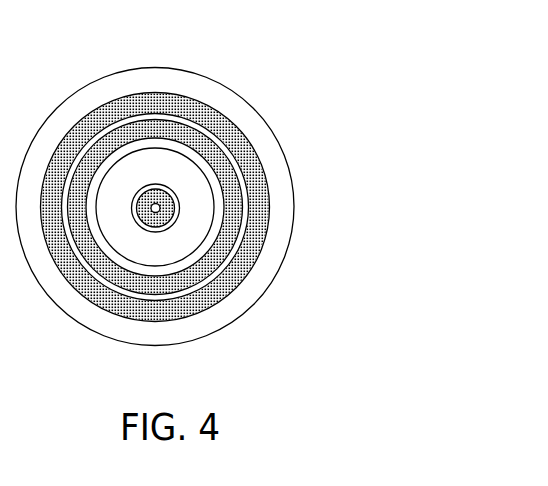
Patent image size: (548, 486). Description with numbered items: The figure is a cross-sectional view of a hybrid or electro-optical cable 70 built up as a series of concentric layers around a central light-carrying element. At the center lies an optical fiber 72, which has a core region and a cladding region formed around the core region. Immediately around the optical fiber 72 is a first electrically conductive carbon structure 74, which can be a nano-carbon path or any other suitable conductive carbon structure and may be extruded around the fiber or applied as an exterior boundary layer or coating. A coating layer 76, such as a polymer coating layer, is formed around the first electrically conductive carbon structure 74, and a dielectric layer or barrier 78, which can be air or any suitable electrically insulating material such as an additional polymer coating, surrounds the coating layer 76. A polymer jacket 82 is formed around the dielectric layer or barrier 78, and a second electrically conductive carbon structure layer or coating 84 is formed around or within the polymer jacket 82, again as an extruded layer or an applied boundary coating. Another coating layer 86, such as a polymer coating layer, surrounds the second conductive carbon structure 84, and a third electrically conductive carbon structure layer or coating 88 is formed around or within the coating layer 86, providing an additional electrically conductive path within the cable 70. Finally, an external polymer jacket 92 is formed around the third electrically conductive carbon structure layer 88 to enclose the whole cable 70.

The hybrid or electro-optical cable 70 is at (516, 34).
The optical fiber 72 is at (160, 201).
The first electrically conductive carbon structure 74 is at (152, 199).
The coating layer 76 is at (142, 185).
The dielectric layer or barrier 78 is at (117, 172).
The polymer jacket 82 is at (218, 179).
The second electrically conductive carbon structure layer or coating 84 is at (243, 197).
The coating layer 86 is at (247, 217).
The third electrically conductive carbon structure layer or coating 88 is at (260, 239).
The external polymer jacket 92 is at (258, 276).